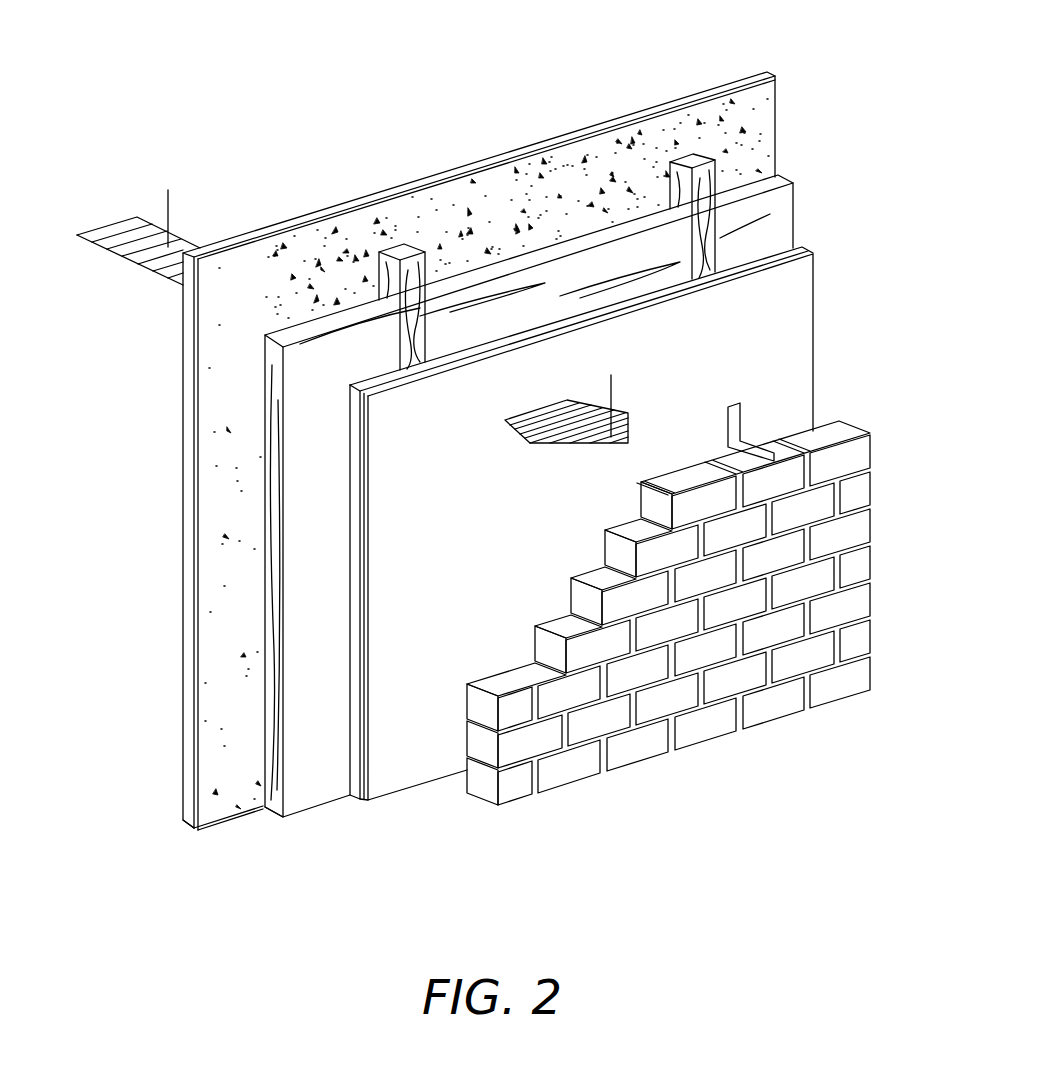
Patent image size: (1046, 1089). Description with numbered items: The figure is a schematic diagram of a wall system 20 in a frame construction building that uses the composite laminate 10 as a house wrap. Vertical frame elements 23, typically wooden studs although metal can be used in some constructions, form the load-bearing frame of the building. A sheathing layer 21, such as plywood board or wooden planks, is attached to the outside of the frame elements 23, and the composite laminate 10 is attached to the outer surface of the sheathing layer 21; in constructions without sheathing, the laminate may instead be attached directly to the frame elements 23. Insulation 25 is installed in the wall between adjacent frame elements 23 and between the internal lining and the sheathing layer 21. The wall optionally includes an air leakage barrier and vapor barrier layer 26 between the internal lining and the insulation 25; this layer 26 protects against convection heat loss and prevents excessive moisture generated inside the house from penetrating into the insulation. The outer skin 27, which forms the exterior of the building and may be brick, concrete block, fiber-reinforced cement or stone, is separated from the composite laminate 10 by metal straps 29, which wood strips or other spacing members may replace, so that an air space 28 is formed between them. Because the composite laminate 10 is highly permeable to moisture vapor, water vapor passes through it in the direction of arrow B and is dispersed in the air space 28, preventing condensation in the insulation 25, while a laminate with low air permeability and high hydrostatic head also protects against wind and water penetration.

The wall system 20 is at (418, 60).
The air leakage barrier and vapor barrier layer 26 is at (770, 108).
The metal straps 29 is at (573, 141).
The insulation 25 is at (786, 181).
The frame elements 23 is at (400, 257).
The sheathing layer 21 is at (797, 254).
The composite laminate 10 is at (808, 330).
The outer skin 27 is at (868, 607).
The air space 28 is at (456, 789).